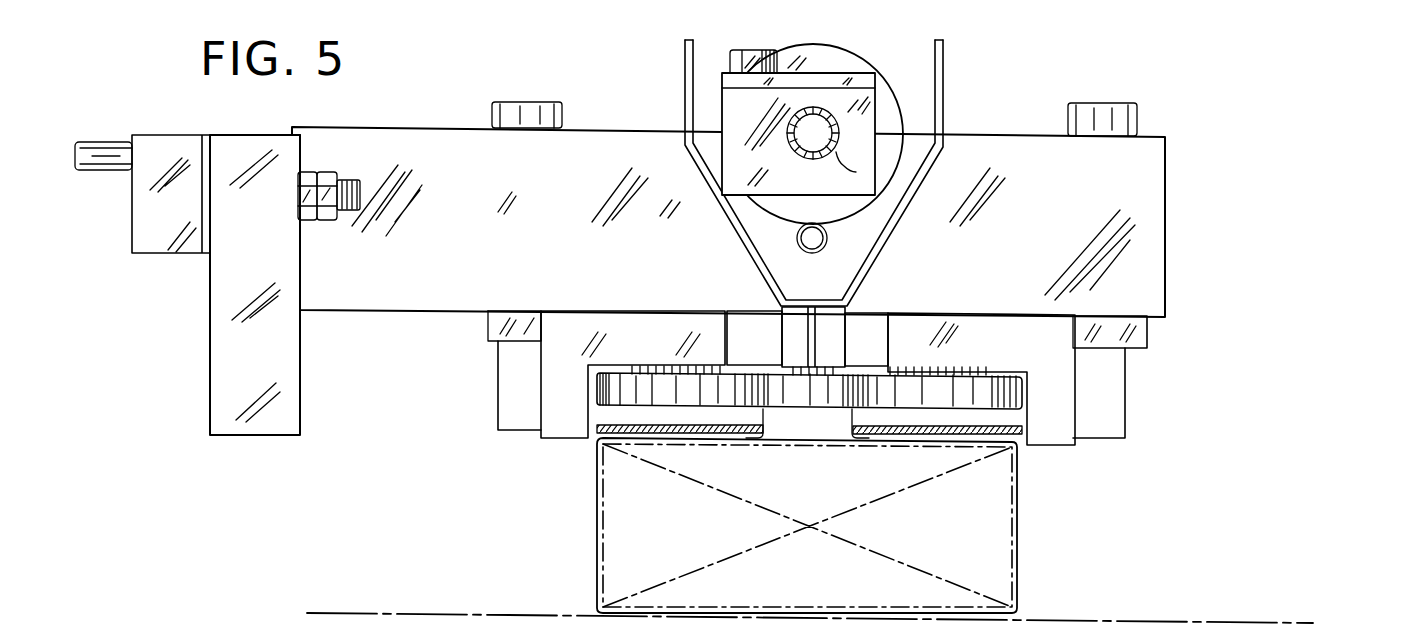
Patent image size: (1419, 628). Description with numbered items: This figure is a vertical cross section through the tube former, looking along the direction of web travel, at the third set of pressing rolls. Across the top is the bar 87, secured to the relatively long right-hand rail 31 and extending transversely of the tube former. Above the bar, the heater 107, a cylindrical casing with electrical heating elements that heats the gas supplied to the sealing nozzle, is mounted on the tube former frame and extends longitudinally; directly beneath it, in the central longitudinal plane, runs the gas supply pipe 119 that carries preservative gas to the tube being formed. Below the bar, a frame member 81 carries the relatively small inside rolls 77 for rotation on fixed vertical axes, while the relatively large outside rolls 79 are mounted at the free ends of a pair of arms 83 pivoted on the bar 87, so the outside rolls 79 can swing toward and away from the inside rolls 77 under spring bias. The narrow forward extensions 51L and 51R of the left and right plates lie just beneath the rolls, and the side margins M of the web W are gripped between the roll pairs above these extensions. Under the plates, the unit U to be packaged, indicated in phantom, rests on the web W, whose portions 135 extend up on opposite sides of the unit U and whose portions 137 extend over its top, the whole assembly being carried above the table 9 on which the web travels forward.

The table 9 is at (400, 612).
The long rail 31 is at (220, 306).
The right plate extension 51R is at (697, 438).
The left plate extension 51L is at (883, 437).
The inside roll 77 is at (818, 420).
The outside roll 79 is at (598, 388).
The frame member 81 is at (782, 330).
The arms 83 is at (488, 324).
The bar 87 is at (1155, 225).
The heater 107 is at (887, 53).
The gas supply pipe 119 is at (810, 253).
The web side portions 135 is at (597, 526).
The web top portions 137 is at (630, 437).
The side margins M is at (750, 418).
The unit U is at (1017, 520).
The web W is at (770, 612).